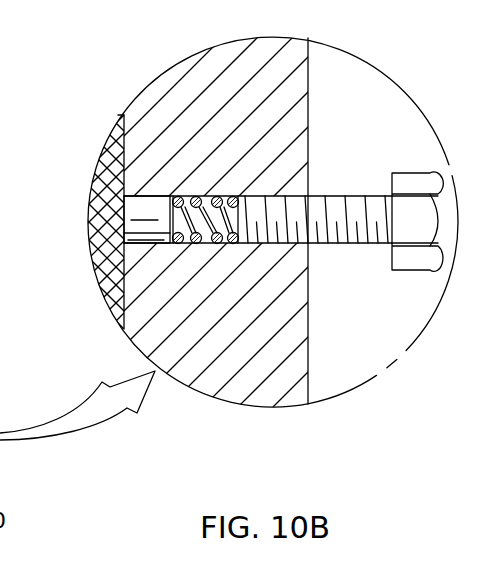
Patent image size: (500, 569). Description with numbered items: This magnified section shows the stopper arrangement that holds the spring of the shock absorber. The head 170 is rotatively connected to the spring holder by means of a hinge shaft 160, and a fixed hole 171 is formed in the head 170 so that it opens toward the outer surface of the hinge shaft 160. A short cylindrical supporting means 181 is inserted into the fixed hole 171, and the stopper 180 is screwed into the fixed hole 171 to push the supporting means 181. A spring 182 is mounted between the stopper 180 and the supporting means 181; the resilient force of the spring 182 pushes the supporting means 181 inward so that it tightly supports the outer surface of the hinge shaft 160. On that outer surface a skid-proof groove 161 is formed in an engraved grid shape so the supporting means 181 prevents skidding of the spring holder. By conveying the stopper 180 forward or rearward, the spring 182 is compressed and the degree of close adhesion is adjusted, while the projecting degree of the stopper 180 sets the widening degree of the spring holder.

The hinge shaft 160 is at (100, 262).
The skid-proof groove 161 is at (110, 158).
The head 170 is at (262, 395).
The fixed hole 171 is at (267, 196).
The stopper 180 is at (353, 247).
The supporting means 181 is at (134, 212).
The spring 182 is at (192, 220).